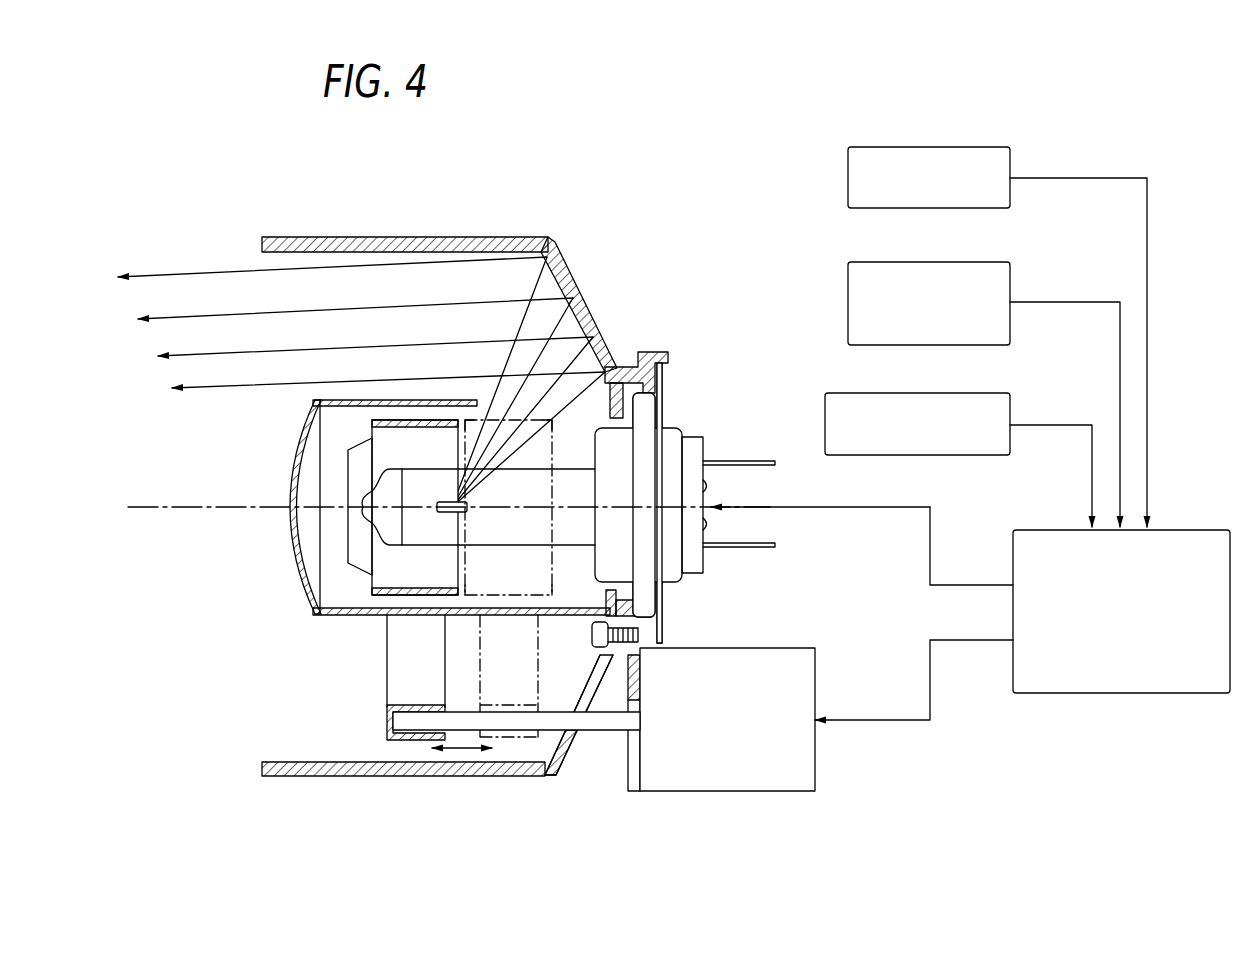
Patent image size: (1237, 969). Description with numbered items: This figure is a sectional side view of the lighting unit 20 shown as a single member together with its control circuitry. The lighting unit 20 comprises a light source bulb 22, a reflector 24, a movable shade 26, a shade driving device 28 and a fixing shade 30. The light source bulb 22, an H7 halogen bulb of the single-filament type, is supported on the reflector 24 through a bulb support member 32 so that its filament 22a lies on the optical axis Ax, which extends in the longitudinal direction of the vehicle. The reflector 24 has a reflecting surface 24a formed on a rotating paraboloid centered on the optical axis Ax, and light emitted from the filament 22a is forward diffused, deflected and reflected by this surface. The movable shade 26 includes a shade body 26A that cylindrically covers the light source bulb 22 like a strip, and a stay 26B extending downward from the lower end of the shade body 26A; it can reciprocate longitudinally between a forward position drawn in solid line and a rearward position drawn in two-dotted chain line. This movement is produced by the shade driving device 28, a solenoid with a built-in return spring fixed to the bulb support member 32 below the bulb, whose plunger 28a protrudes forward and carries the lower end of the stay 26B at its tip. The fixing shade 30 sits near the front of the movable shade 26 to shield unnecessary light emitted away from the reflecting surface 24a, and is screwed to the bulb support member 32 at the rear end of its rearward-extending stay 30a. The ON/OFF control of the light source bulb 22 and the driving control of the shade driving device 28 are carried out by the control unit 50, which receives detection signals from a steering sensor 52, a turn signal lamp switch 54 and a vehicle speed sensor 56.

The lighting unit 20 is at (668, 218).
The light source bulb 22 is at (354, 491).
The filament 22a is at (450, 502).
The reflector 24 is at (590, 292).
The reflecting surface 24a is at (546, 262).
The movable shade 26 is at (505, 412).
The shade body 26A is at (352, 535).
The stay 26B is at (387, 652).
The shade driving device 28 is at (789, 646).
The plunger 28a is at (598, 731).
The fixing shade 30 is at (288, 492).
The stay 30a is at (510, 615).
The bulb support member 32 is at (674, 353).
The control unit 50 is at (1127, 694).
The steering sensor 52 is at (994, 147).
The turn signal lamp switch 54 is at (992, 262).
The vehicle speed sensor 56 is at (990, 393).
The optical axis Ax is at (176, 510).